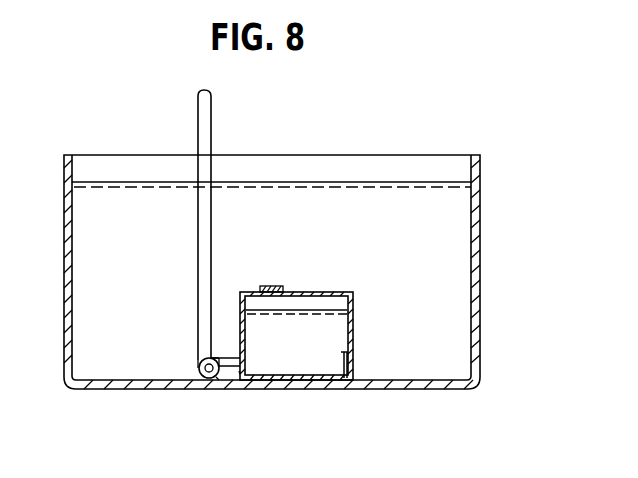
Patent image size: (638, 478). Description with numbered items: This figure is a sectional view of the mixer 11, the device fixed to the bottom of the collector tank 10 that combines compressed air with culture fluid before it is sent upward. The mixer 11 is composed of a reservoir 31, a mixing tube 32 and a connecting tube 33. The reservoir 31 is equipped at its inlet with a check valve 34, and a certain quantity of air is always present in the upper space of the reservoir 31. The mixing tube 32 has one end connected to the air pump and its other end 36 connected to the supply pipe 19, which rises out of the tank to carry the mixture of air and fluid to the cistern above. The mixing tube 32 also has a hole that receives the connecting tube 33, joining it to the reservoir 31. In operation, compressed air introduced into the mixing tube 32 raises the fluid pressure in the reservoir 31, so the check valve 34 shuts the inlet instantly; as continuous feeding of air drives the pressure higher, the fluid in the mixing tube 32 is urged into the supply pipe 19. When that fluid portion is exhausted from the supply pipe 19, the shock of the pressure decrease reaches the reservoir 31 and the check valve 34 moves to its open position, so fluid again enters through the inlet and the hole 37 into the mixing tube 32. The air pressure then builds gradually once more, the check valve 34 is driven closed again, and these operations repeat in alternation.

The collector tank 10 is at (479, 158).
The supply pipe 19 is at (206, 136).
The mixer 11 is at (306, 290).
The reservoir 31 is at (354, 291).
The mixing tube 32 is at (205, 358).
The connecting tube 33 is at (228, 357).
The check valve 34 is at (344, 362).
The other end of mixing tube 36 is at (198, 366).
The hole 37 is at (238, 371).